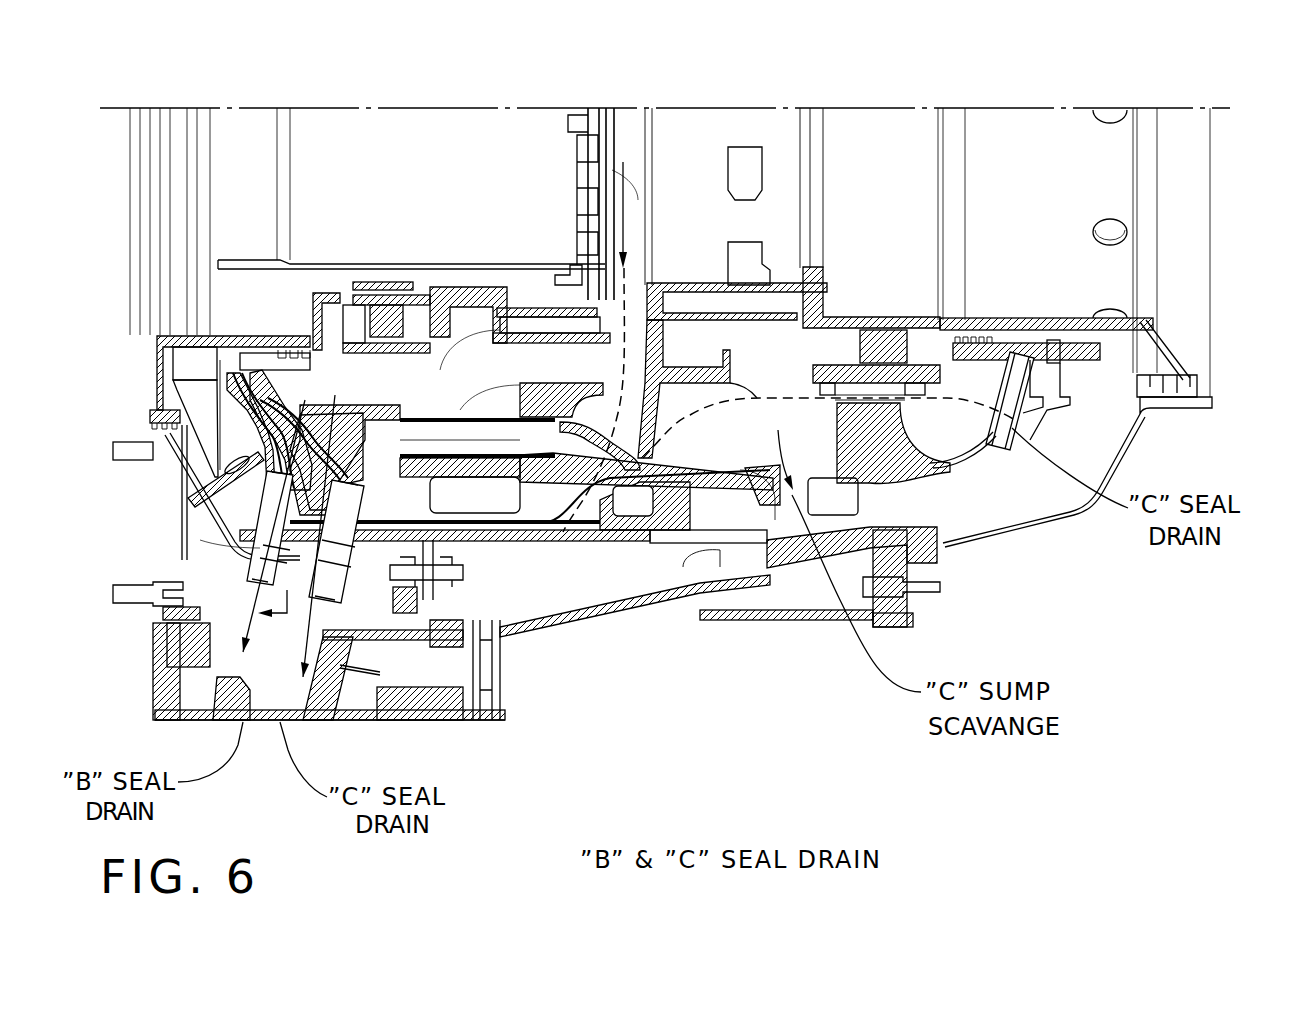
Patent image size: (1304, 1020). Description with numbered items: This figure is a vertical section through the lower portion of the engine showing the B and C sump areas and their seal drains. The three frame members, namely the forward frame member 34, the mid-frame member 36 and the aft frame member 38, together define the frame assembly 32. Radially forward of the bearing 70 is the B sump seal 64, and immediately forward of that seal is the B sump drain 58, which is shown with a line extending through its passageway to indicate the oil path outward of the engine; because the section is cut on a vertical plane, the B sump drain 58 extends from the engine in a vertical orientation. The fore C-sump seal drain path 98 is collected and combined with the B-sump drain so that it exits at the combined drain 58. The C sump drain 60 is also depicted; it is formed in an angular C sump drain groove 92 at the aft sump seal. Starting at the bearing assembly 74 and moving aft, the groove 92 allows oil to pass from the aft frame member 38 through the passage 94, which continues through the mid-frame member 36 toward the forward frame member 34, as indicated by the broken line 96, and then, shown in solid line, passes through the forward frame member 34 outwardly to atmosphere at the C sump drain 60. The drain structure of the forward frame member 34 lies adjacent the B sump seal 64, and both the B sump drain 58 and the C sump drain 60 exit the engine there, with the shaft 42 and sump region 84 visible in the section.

The frame assembly 32 is at (1027, 70).
The forward frame member 34 is at (258, 118).
The mid-frame member 36 is at (705, 107).
The aft frame member 38 is at (1047, 108).
The shaft 42 is at (412, 517).
The B sump drain 58 is at (237, 345).
The C sump drain 60 is at (348, 603).
The B sump seal 64 is at (258, 325).
The bearing 70 is at (388, 265).
The bearing assembly 74 is at (880, 300).
The C sump 84 is at (795, 492).
The C sump drain groove 92 is at (1056, 338).
The passage 94 is at (1023, 413).
The broken line 96 is at (950, 397).
The fore C-sump seal drain path 98 is at (580, 520).